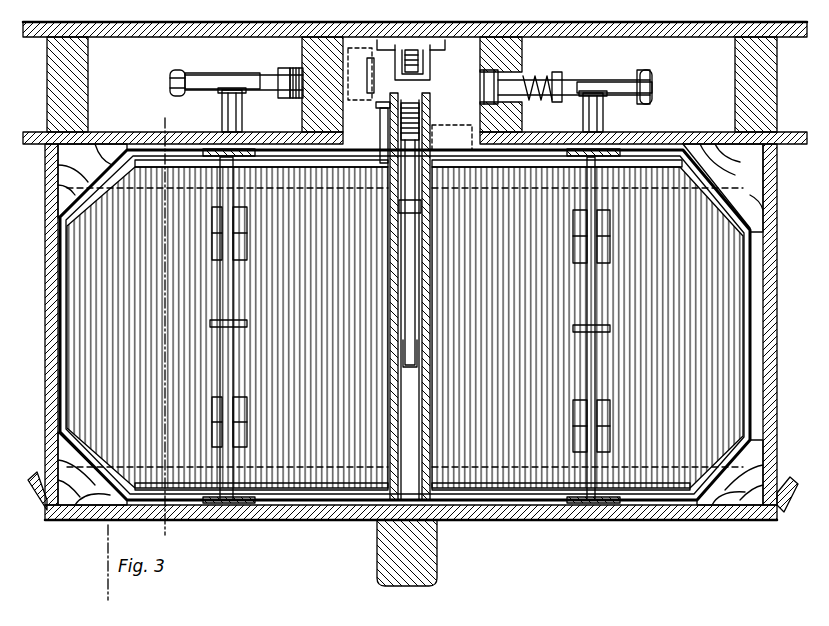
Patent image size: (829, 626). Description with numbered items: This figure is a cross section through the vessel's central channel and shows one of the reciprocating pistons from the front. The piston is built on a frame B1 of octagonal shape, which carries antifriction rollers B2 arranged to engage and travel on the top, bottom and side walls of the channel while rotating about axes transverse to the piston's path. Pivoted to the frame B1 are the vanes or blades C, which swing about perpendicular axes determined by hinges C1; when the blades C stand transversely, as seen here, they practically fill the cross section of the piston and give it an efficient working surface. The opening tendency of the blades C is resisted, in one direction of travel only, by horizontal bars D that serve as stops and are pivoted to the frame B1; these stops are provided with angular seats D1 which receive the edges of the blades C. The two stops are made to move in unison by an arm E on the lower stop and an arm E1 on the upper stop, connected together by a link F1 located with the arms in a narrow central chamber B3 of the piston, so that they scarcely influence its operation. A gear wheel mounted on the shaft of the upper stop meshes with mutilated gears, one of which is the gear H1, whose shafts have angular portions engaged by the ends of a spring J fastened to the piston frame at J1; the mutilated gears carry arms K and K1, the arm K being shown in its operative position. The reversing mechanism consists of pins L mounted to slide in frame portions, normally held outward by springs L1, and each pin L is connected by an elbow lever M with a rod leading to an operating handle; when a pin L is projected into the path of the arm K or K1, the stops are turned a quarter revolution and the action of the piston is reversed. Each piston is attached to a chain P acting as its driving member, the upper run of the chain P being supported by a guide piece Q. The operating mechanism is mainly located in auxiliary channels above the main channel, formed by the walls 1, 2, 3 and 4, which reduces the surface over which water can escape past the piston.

The wall 1 is at (322, 42).
The wall 2 is at (502, 42).
The wall 3 is at (88, 88).
The wall 4 is at (735, 96).
The chain P is at (418, 50).
The guide piece Q is at (432, 58).
The mutilated gear H1 is at (404, 333).
The spring J is at (375, 128).
The fastening point of spring J1 is at (376, 98).
The arm K is at (302, 63).
The arm K1 is at (456, 125).
The pin L is at (252, 92).
The spring L1 is at (290, 98).
The elbow lever M is at (176, 97).
The frame B1 is at (750, 256).
The antifriction rollers B2 is at (228, 92).
The central chamber B3 is at (432, 300).
The vanes or blades C is at (405, 327).
The hinges C1 is at (213, 237).
The bars (stops) D is at (655, 185).
The angular seats D1 is at (522, 498).
The arm E is at (382, 553).
The arm E1 is at (430, 208).
The central rod F1 is at (405, 245).